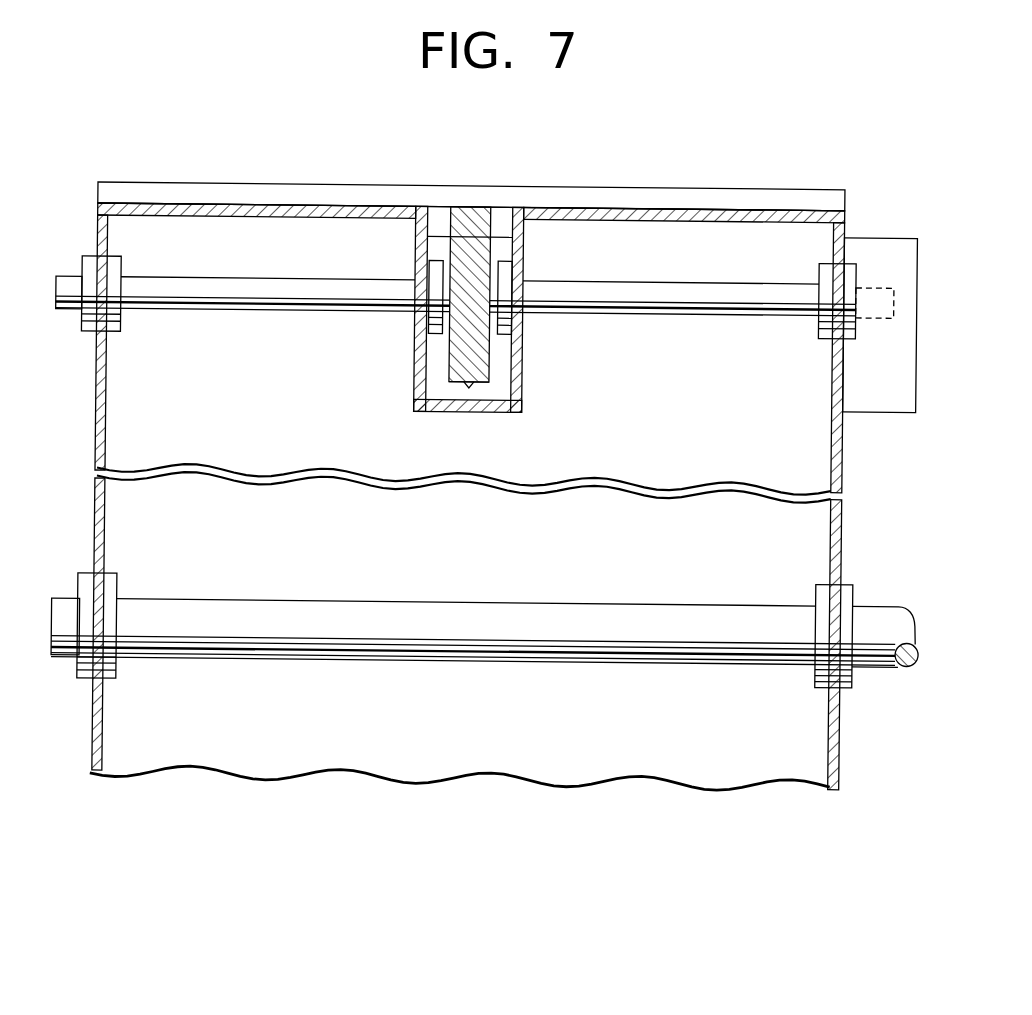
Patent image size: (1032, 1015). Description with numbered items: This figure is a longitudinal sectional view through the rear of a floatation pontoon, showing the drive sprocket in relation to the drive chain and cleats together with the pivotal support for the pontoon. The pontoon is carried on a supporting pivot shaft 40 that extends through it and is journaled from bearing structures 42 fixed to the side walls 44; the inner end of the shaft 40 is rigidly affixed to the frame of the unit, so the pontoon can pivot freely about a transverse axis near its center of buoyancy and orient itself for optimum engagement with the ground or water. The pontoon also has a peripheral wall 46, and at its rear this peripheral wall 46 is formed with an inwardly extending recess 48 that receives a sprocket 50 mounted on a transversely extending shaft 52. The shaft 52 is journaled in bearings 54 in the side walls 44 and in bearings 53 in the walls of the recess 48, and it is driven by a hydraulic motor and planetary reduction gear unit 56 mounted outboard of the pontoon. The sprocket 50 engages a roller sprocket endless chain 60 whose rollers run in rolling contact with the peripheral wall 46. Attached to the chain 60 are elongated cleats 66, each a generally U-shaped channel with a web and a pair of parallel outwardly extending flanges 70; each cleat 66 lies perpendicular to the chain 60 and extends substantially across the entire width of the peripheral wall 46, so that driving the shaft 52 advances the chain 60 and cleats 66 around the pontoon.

The supporting pivot shaft 40 is at (435, 634).
The bearing structures 42 is at (828, 620).
The side walls 44 is at (846, 549).
The peripheral wall 46 is at (722, 206).
The recess 48 is at (525, 368).
The sprocket 50 is at (467, 354).
The shaft 52 is at (703, 292).
The bearings 53 is at (509, 293).
The bearings 54 is at (114, 270).
The hydraulic motor and planetary reduction gear unit 56 is at (881, 242).
The roller sprocket endless chain 60 is at (498, 208).
The cleats 66 is at (652, 180).
The flanges 70 is at (772, 191).